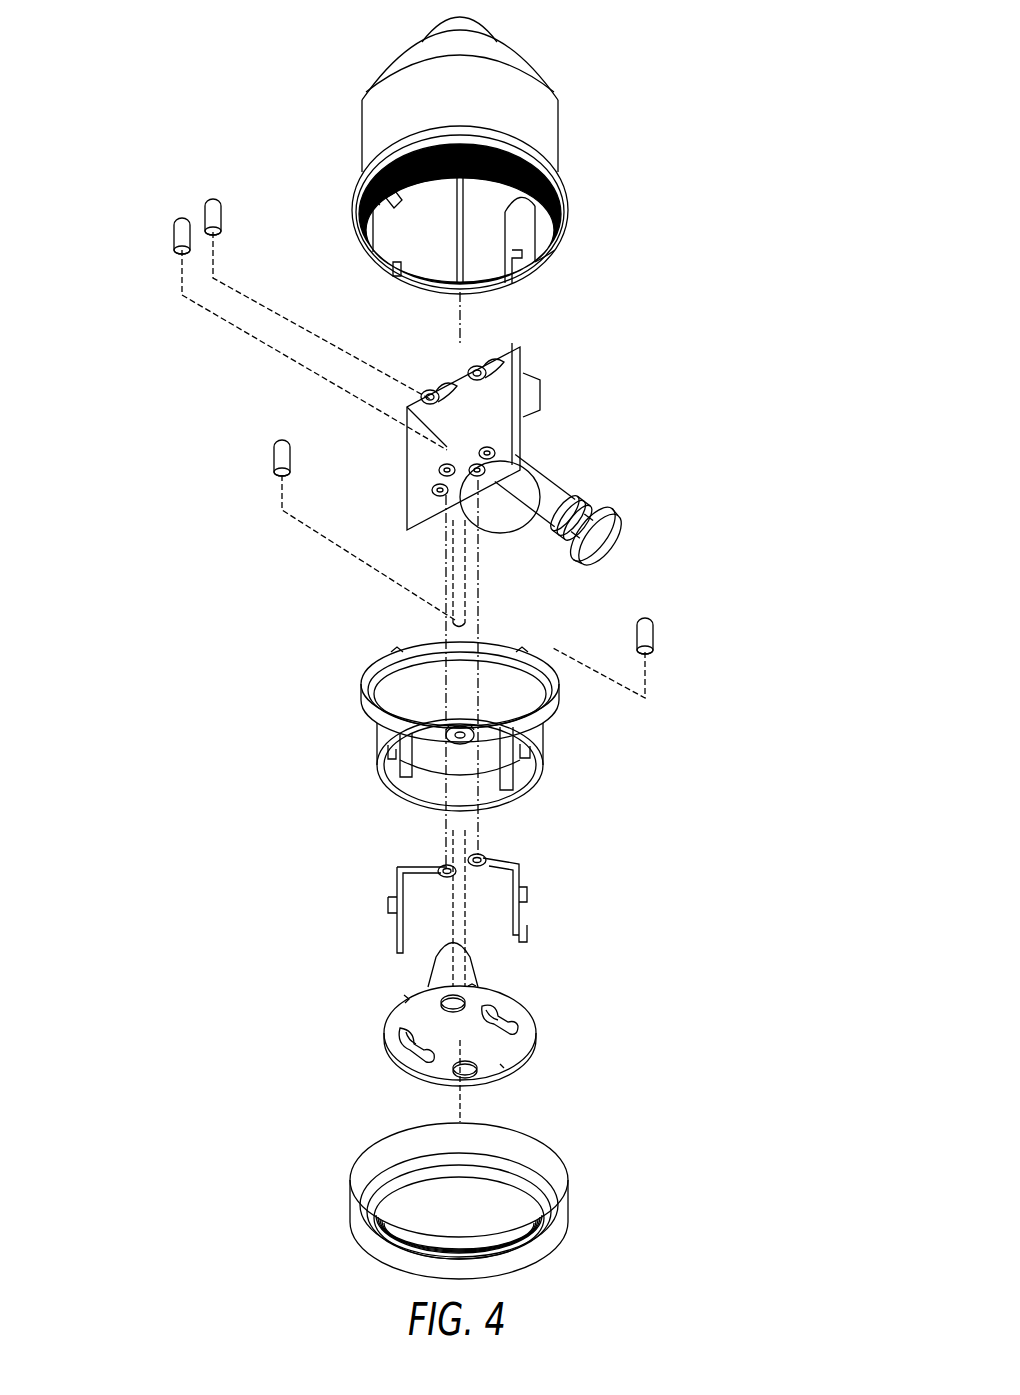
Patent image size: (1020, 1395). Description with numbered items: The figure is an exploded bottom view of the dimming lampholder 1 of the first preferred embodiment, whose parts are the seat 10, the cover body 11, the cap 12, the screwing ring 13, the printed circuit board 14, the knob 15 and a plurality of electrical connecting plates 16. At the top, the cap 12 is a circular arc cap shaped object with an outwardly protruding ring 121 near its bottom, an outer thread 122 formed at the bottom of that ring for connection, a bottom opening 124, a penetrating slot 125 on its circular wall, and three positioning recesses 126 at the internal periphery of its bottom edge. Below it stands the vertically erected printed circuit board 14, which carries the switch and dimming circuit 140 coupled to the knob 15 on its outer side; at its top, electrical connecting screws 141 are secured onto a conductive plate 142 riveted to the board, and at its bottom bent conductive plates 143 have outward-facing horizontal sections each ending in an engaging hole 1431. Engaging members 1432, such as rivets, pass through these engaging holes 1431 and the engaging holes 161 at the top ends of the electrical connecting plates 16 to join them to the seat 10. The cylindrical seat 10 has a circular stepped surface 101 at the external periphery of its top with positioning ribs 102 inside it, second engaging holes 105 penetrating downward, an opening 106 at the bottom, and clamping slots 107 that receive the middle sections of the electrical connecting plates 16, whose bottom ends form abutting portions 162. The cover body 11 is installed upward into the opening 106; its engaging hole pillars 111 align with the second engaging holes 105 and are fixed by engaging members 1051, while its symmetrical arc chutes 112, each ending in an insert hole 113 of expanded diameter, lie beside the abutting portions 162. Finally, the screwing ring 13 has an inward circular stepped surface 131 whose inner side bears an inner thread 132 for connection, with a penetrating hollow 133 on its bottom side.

The dimming lampholder 1 is at (672, 383).
The seat 10 is at (535, 730).
The circular stepped surface 101 is at (365, 678).
The positioning ribs 102 is at (395, 648).
The second engaging holes 105 is at (475, 727).
The engaging members 1051 is at (276, 455).
The opening 106 is at (430, 778).
The clamping slots 107 is at (388, 775).
The cover body 11 is at (525, 1052).
The engaging hole pillars 111 is at (445, 967).
The arc chutes 112 is at (520, 1027).
The insert hole 113 is at (505, 1008).
The cap 12 is at (558, 112).
The outwardly protruding ring 121 is at (560, 185).
The outer thread 122 is at (368, 197).
The opening 124 is at (412, 240).
The penetrating slot 125 is at (523, 262).
The positioning recesses 126 is at (537, 197).
The screwing ring 13 is at (552, 1168).
The circular stepped surface 131 is at (372, 1248).
The inner thread 132 is at (520, 1250).
The penetrating hollow 133 is at (510, 1208).
The printed circuit board 14 is at (420, 457).
The switch and dimming circuit 140 is at (522, 520).
The electrical connecting screws 141 is at (441, 388).
The conductive plate 142 is at (431, 391).
The conductive plates 143 is at (505, 452).
The engaging hole 1431 is at (540, 490).
The engaging members 1432 is at (215, 212).
The knob 15 is at (607, 520).
The electrical connecting plates 16 is at (397, 892).
The engaging hole 161 is at (440, 868).
The abutting portion 162 is at (397, 928).